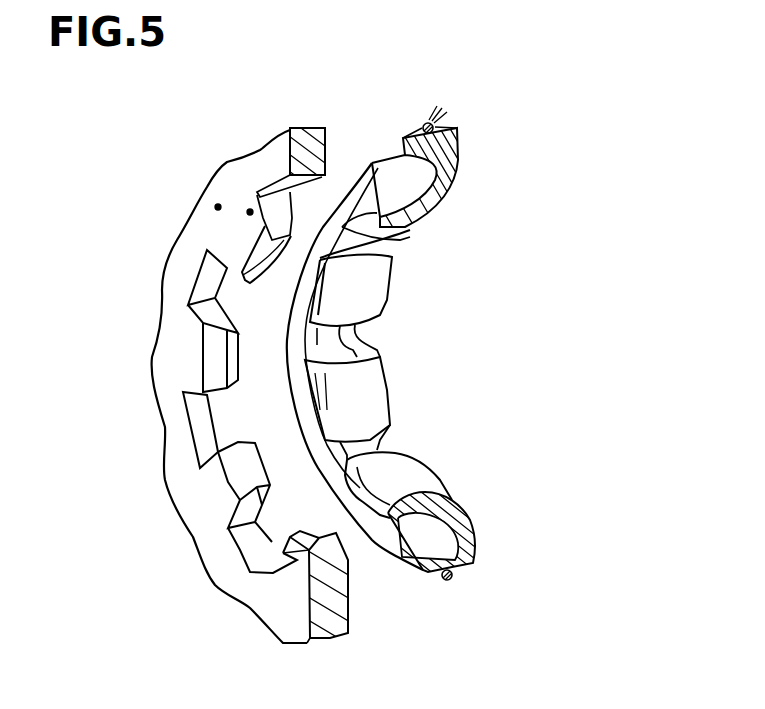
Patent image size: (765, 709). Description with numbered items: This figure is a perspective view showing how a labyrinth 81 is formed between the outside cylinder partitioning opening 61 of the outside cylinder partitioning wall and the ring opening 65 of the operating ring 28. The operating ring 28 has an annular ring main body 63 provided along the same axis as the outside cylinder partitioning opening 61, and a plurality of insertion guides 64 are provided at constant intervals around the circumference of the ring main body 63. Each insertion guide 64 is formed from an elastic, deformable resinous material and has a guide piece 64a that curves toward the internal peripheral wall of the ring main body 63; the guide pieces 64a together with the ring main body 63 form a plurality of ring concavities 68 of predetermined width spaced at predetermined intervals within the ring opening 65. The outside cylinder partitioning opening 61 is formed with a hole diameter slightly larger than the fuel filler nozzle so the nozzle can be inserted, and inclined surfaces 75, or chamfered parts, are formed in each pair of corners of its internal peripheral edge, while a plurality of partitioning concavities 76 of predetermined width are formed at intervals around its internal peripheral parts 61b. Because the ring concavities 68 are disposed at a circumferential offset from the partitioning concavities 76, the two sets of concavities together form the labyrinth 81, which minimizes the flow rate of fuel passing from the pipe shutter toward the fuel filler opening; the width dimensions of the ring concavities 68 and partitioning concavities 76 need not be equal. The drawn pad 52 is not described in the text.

The operating ring 28 is at (438, 115).
The pad 52 is at (217, 206).
The outside cylinder partitioning opening 61 is at (238, 353).
The internal peripheral parts 61b is at (249, 210).
The ring main body 63 is at (365, 448).
The insertion guide 64 is at (457, 150).
The guide piece 64a is at (435, 218).
The ring opening 65 is at (380, 474).
The ring concavity 68 is at (352, 235).
The inclined surface 75 is at (255, 245).
The partitioning concavity 76 is at (208, 277).
The labyrinth 81 is at (522, 160).